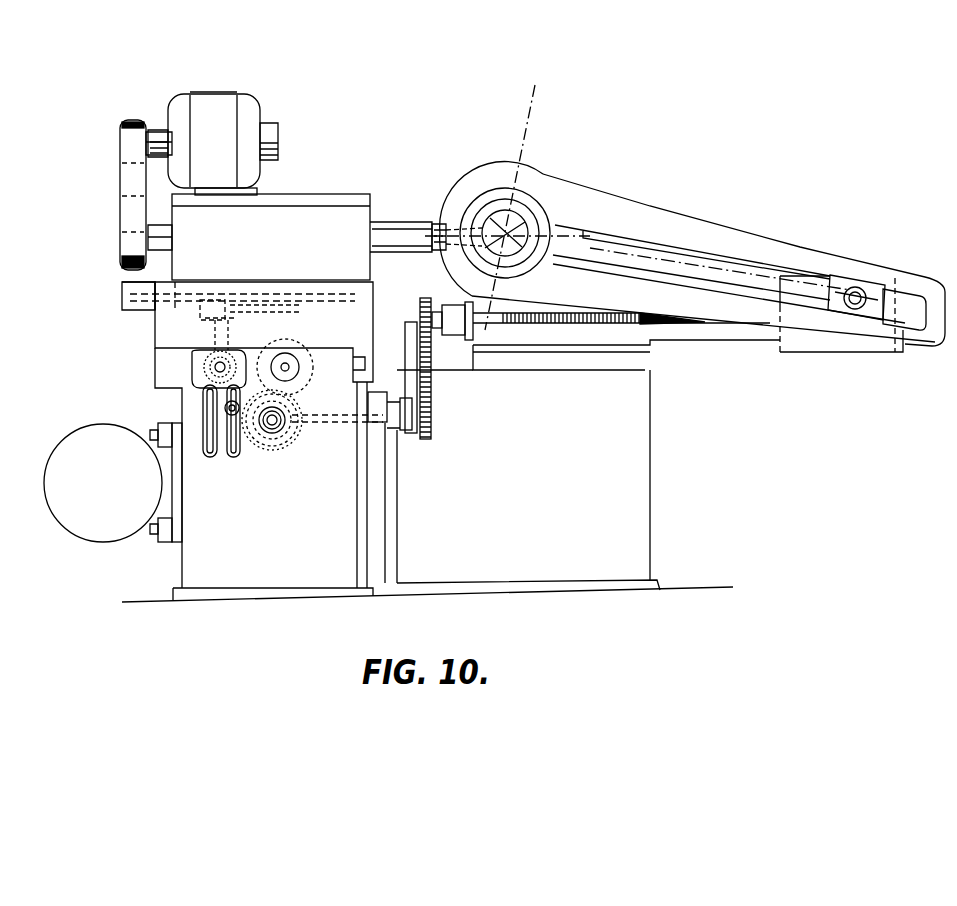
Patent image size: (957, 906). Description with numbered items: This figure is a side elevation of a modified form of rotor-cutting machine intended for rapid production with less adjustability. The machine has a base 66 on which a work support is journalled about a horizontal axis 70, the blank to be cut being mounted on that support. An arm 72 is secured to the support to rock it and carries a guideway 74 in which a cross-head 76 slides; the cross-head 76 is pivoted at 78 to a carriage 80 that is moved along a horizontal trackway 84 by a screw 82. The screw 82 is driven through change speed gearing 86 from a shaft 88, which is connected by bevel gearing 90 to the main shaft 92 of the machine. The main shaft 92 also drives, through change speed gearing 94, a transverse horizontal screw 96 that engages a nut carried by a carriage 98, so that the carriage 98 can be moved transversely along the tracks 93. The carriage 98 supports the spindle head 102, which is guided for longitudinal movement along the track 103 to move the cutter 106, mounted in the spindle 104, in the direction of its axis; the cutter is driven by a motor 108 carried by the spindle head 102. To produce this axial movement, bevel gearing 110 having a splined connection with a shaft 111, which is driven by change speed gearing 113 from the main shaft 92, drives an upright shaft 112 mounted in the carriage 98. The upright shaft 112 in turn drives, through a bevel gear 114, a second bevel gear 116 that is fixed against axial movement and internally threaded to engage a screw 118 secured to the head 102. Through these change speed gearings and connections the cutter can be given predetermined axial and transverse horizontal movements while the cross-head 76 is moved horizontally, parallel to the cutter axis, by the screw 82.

The base 66 is at (645, 456).
The horizontal axis 70 is at (524, 226).
The arm 72 is at (672, 224).
The guideway 74 is at (737, 265).
The cross-head 76 is at (848, 284).
The pivot 78 is at (858, 308).
The carriage 80 is at (806, 350).
The screw 82 is at (568, 326).
The horizontal trackway 84 is at (688, 340).
The change speed gearing 86 is at (431, 372).
The shaft 88 is at (318, 417).
The bevel gearing 90 is at (284, 428).
The main shaft 92 is at (276, 435).
The tracks 93 is at (192, 368).
The change speed gearing 94 is at (294, 344).
The transverse horizontal screw 96 is at (283, 360).
The carriage 98 is at (368, 306).
The spindle head 102 is at (297, 210).
The track 103 is at (116, 279).
The spindle 104 is at (393, 222).
The cutter 106 is at (440, 222).
The motor 108 is at (268, 90).
The bevel gearing 110 is at (210, 352).
The shaft 111 is at (212, 374).
The upright shaft 112 is at (224, 346).
The change speed gearing 113 is at (248, 440).
The bevel gear 114 is at (205, 318).
The second bevel gear 116 is at (232, 300).
The screw 118 is at (282, 300).